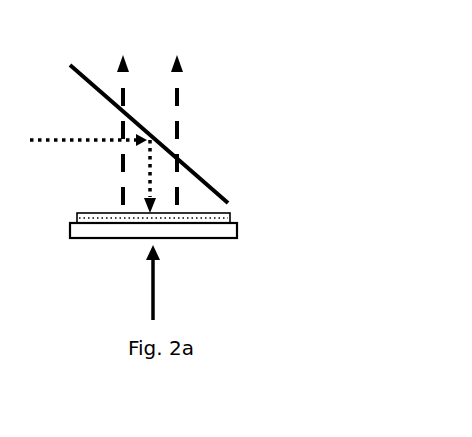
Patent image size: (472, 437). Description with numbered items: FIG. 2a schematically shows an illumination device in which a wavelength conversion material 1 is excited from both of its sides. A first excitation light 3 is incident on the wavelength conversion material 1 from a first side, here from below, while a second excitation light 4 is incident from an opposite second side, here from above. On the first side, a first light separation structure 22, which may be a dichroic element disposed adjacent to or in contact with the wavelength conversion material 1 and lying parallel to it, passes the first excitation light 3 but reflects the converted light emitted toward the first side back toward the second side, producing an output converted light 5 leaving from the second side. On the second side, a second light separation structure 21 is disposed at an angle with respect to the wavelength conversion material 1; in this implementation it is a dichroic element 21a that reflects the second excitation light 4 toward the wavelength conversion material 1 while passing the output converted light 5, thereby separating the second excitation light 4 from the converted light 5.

The wavelength conversion material 1 is at (227, 215).
The first excitation light 3 is at (155, 305).
The second excitation light 4 is at (150, 162).
The output converted light 5 is at (178, 68).
The second light separation structure 21 is at (221, 134).
The dichroic element 21a is at (203, 176).
The first light separation structure 22 is at (223, 232).